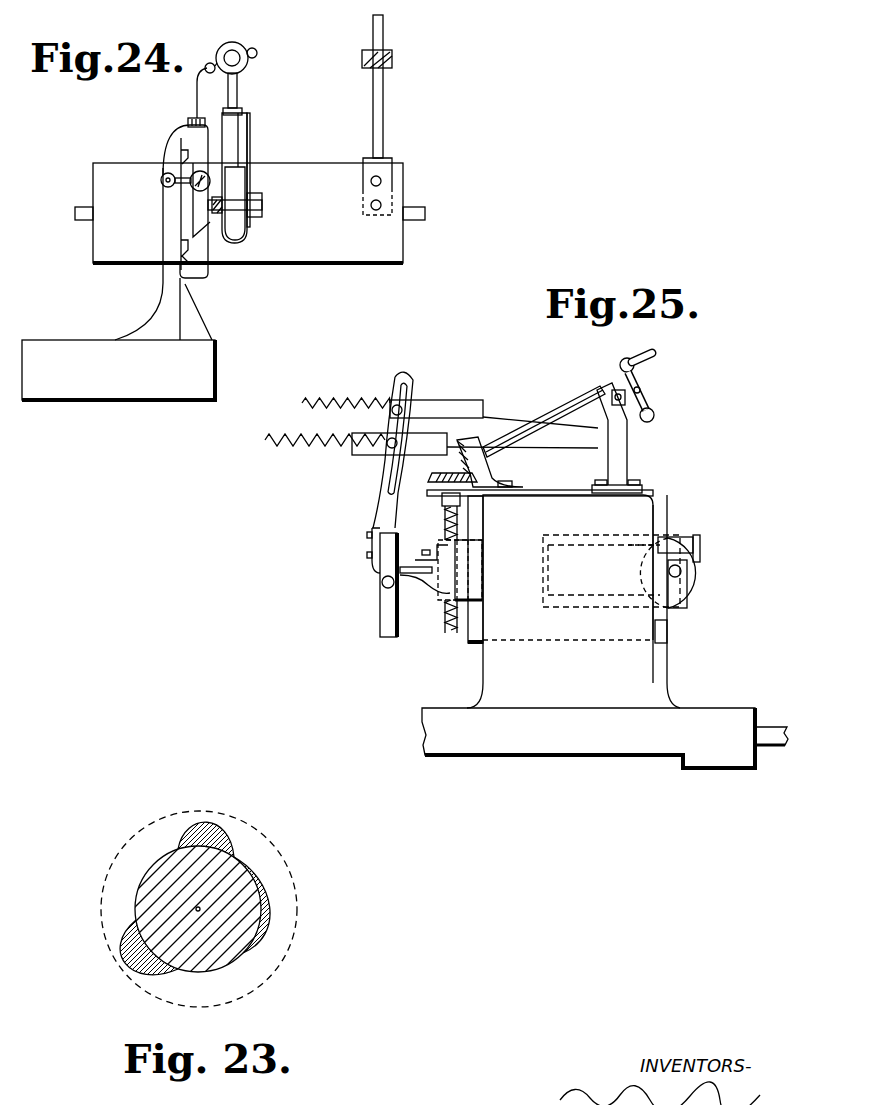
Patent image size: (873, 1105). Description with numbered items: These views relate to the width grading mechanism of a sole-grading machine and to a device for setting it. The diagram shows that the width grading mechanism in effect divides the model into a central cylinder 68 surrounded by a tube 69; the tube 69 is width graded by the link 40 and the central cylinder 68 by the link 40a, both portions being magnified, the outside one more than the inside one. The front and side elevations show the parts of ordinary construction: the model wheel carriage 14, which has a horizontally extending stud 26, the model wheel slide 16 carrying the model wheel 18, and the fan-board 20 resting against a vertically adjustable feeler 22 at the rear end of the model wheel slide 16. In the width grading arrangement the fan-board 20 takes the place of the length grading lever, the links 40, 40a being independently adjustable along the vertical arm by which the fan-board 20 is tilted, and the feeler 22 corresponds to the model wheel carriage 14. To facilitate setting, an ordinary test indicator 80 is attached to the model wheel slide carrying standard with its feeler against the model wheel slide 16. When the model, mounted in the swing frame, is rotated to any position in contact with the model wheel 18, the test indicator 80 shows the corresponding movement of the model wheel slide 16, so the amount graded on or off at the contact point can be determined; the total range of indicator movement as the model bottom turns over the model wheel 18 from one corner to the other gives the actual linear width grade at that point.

In FIG. 24, the model wheel carriage 14 is at (118, 284).
In FIG. 25, the model wheel carriage 14 is at (588, 738).
In FIG. 24, the model wheel slide 16 is at (200, 262).
In FIG. 25, the model wheel slide 16 is at (658, 630).
In FIG. 24, the model wheel 18 is at (233, 230).
In FIG. 25, the model wheel 18 is at (694, 582).
In FIG. 24, the fan-board 20 is at (313, 237).
In FIG. 25, the fan-board 20 is at (380, 607).
In FIG. 25, the feeler 22 is at (402, 575).
In FIG. 25, the stud 26 is at (768, 736).
In FIG. 25, the link 40 is at (507, 419).
In FIG. 25, the link 40a is at (547, 449).
In FIG. 23, the central cylinder 68 is at (255, 885).
In FIG. 23, the tube 69 is at (283, 908).
In FIG. 24, the test indicator 80 is at (210, 178).
In FIG. 25, the test indicator 80 is at (700, 545).